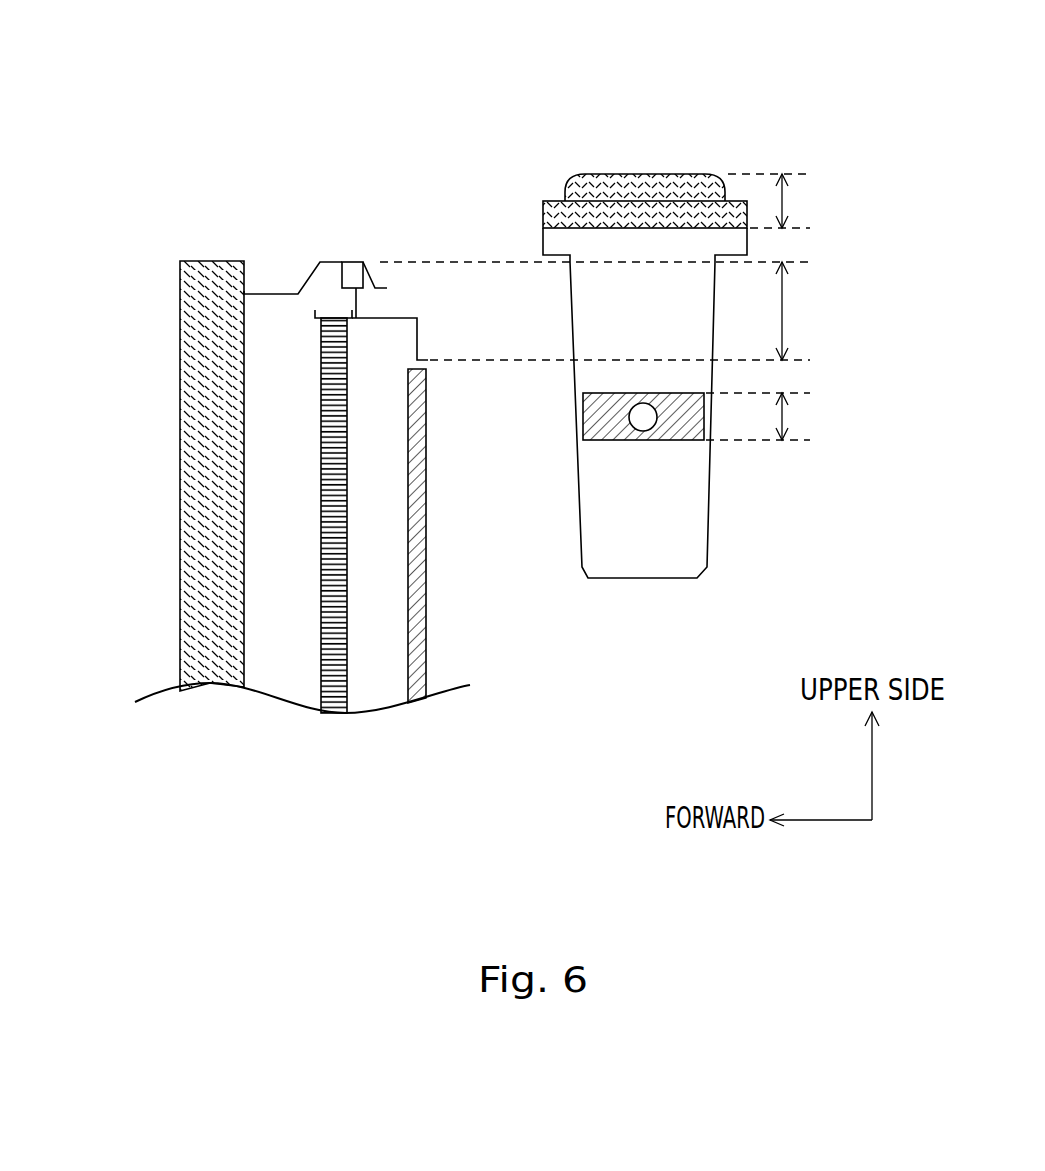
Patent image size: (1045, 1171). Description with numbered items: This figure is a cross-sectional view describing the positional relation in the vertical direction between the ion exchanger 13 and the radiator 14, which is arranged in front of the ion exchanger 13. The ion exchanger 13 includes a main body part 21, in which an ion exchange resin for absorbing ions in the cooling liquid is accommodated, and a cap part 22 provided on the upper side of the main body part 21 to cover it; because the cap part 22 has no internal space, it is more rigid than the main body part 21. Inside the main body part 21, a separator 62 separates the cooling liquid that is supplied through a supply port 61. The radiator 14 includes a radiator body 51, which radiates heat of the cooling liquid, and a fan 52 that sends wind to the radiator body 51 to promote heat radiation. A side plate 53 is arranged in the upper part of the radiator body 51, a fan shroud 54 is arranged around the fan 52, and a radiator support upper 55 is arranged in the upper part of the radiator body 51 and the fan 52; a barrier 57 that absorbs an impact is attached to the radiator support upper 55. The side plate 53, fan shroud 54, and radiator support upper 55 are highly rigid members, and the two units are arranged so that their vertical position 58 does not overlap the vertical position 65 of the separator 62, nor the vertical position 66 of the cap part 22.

The ion exchanger 13 is at (700, 90).
The radiator 14 is at (400, 200).
The main body part 21 is at (592, 481).
The cap part 22 is at (640, 176).
The radiator body 51 is at (333, 655).
The fan 52 is at (428, 638).
The side plate 53 is at (314, 316).
The fan shroud 54 is at (407, 338).
The radiator support upper 55 is at (347, 262).
The barrier 57 is at (190, 636).
The position of the side plate, fan shroud, and radiator support upper 58 is at (782, 310).
The supply port 61 is at (645, 440).
The separator 62 is at (678, 440).
The position of the separator 65 is at (782, 417).
The position of the cap part 66 is at (782, 202).